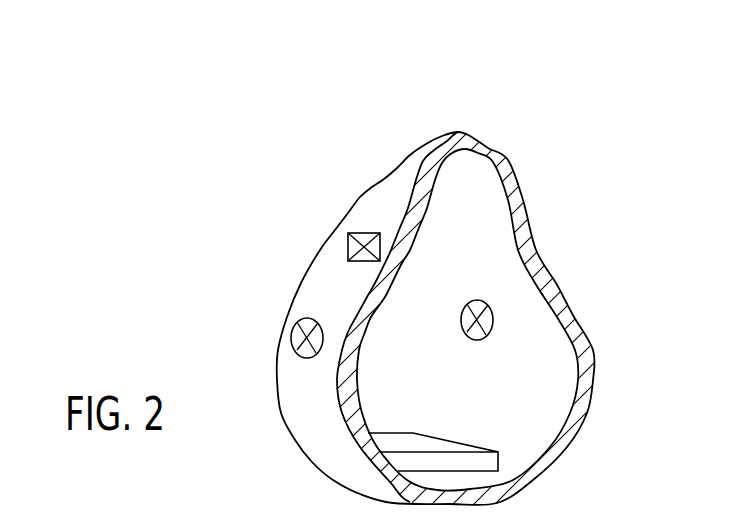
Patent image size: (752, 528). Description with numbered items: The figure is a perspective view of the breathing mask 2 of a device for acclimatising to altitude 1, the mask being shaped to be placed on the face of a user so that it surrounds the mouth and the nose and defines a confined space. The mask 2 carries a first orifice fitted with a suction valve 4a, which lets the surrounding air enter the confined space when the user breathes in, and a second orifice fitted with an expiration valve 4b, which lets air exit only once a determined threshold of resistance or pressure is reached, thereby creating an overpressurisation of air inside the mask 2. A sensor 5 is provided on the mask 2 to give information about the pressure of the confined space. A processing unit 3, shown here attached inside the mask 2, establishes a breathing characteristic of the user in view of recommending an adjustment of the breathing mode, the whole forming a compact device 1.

The device for acclimatising to altitude 1 is at (572, 128).
The breathing mask 2 is at (362, 193).
The processing unit 3 is at (473, 462).
The suction valve 4a is at (302, 338).
The expiration valve 4b is at (513, 308).
The sensor 5 is at (358, 247).